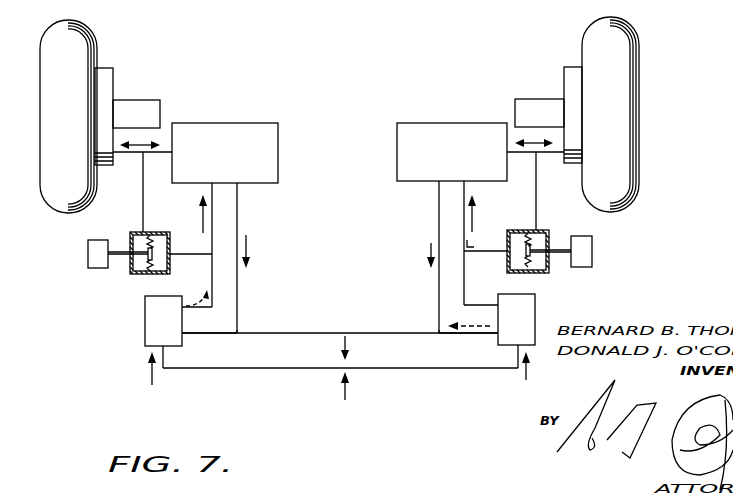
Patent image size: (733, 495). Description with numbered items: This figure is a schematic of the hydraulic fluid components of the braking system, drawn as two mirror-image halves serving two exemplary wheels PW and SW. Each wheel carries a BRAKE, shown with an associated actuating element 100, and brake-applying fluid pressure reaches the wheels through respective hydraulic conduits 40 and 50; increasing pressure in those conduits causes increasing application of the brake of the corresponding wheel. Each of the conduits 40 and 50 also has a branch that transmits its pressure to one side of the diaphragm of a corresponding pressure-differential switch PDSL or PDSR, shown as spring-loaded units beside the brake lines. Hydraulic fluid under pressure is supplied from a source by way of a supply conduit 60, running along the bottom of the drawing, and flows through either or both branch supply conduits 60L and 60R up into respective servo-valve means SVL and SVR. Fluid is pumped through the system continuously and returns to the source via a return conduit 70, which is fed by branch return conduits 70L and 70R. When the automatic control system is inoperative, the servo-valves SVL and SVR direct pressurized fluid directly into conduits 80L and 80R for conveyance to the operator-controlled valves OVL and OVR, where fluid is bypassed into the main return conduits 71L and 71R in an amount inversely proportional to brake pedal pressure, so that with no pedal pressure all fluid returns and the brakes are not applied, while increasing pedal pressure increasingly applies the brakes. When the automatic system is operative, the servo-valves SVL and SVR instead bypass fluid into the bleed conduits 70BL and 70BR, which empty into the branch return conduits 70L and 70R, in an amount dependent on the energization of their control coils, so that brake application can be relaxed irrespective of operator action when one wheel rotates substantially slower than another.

The wheel PW is at (88, 22).
The wheel SW is at (621, 68).
The brake BRAKE is at (112, 68).
The brake actuator 100 is at (152, 100).
The operator-controlled valve OVL is at (238, 123).
The operator-controlled valve OVR is at (428, 123).
The hydraulic conduit 40 is at (128, 160).
The hydraulic conduit 50 is at (560, 160).
The pressure-differential switch PDSL is at (122, 280).
The pressure-differential switch PDSR is at (566, 230).
The servo-valve means SVL is at (145, 328).
The servo-valve means SVR is at (518, 297).
The conduit 80L is at (212, 276).
The conduit 80R is at (465, 234).
The main return conduit 71L is at (238, 296).
The main return conduit 71R is at (438, 296).
The return conduit 70 is at (338, 337).
The branch return conduit 70L is at (250, 332).
The branch return conduit 70R is at (376, 318).
The bleed conduit 70BL is at (212, 336).
The bleed conduit 70BR is at (488, 340).
The supply conduit 60 is at (338, 387).
The branch supply conduit 60L is at (278, 372).
The branch supply conduit 60R is at (483, 372).